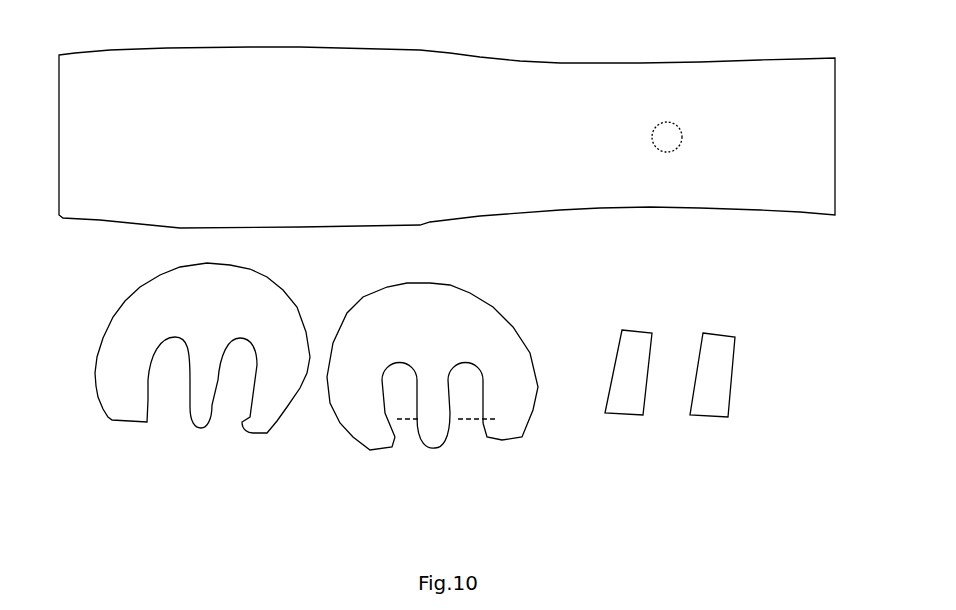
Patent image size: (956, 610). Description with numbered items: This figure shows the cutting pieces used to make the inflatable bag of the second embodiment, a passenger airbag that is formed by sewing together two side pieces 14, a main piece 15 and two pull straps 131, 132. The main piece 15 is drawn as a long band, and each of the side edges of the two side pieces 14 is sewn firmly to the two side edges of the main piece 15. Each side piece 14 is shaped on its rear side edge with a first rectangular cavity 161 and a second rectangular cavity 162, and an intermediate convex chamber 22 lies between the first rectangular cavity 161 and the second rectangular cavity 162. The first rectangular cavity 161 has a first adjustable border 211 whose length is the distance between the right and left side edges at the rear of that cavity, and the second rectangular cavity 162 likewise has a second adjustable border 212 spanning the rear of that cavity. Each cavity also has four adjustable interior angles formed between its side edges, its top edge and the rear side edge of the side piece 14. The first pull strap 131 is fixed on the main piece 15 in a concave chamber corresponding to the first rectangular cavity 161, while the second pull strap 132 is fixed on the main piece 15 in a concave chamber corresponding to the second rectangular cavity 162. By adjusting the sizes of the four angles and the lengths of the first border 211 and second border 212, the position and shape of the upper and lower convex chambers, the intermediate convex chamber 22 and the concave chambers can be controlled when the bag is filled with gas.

The main piece 15 is at (472, 98).
The side piece 14 is at (270, 325).
The first rectangular cavity 161 is at (400, 393).
The second rectangular cavity 162 is at (465, 398).
The intermediate convex chamber 22 is at (443, 453).
The first adjustable border 211 is at (408, 423).
The second adjustable border 212 is at (472, 422).
The first pull strap 131 is at (650, 345).
The second pull strap 132 is at (728, 367).